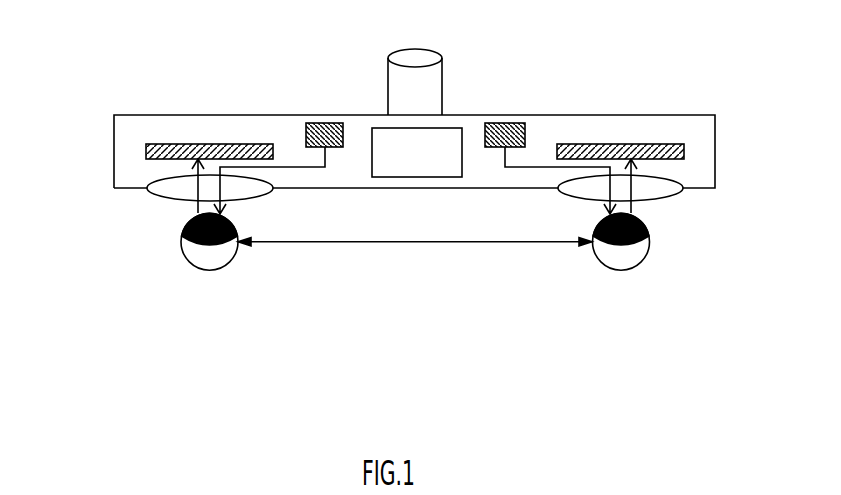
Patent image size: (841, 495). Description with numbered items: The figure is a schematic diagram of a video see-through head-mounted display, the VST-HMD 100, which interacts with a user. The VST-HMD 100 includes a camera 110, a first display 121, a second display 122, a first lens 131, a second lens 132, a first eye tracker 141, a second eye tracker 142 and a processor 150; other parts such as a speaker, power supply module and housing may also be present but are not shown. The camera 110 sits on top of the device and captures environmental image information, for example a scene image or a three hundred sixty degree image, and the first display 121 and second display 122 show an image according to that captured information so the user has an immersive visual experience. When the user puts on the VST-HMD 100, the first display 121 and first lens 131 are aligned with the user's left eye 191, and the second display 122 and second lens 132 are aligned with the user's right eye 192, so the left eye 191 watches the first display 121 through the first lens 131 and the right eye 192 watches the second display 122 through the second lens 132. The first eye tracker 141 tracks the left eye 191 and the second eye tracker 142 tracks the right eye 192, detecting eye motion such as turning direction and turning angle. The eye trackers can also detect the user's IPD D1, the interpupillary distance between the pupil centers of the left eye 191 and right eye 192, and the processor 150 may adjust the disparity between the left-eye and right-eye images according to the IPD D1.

The VST-HMD 100 is at (115, 115).
The camera 110 is at (442, 85).
The first display device 121 is at (210, 143).
The second display device 122 is at (625, 143).
The first lens 131 is at (172, 200).
The second lens 132 is at (660, 200).
The first eye tracker 141 is at (323, 122).
The second eye tracker 142 is at (503, 122).
The processor 150 is at (440, 164).
The left eye 191 is at (210, 270).
The right eye 192 is at (620, 270).
The IPD D1 is at (415, 226).